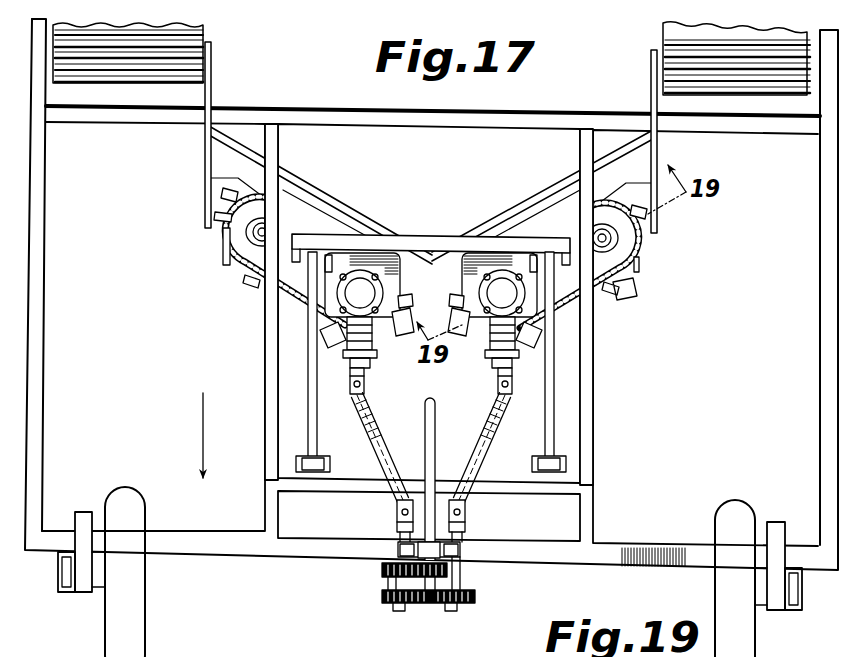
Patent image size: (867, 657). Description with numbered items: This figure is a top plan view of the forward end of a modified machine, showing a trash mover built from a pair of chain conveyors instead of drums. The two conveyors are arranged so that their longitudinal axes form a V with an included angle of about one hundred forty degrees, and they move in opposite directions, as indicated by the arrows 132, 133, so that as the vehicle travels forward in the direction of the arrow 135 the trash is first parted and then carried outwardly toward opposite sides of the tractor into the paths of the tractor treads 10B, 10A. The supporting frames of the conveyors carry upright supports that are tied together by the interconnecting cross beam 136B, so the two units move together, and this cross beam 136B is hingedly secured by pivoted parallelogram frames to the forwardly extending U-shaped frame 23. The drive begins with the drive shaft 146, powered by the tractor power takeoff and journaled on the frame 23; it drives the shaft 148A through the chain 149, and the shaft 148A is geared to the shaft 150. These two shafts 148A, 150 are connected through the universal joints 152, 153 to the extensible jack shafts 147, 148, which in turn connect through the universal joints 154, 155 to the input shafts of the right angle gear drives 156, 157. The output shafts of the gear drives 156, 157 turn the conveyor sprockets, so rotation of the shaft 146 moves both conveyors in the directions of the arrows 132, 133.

The tractor tread 10A is at (672, 35).
The tractor tread 10B is at (190, 43).
The forwardly extending U-shaped frame 23 is at (588, 379).
The arrow 132 is at (224, 288).
The arrow 133 is at (622, 303).
The arrow 135 is at (203, 428).
The interconnecting cross beam 136B is at (429, 218).
The drive shaft 146 is at (435, 438).
The jack shaft 147 is at (378, 432).
The jack shaft 148 is at (472, 447).
The shaft 148A is at (396, 610).
The chain 149 is at (382, 570).
The shaft 150 is at (448, 608).
The universal joint 152 is at (393, 518).
The universal joint 153 is at (468, 518).
The universal joint 154 is at (366, 380).
The universal joint 155 is at (511, 397).
The right angle gear drive 156 is at (360, 290).
The right angle gear drive 157 is at (500, 290).